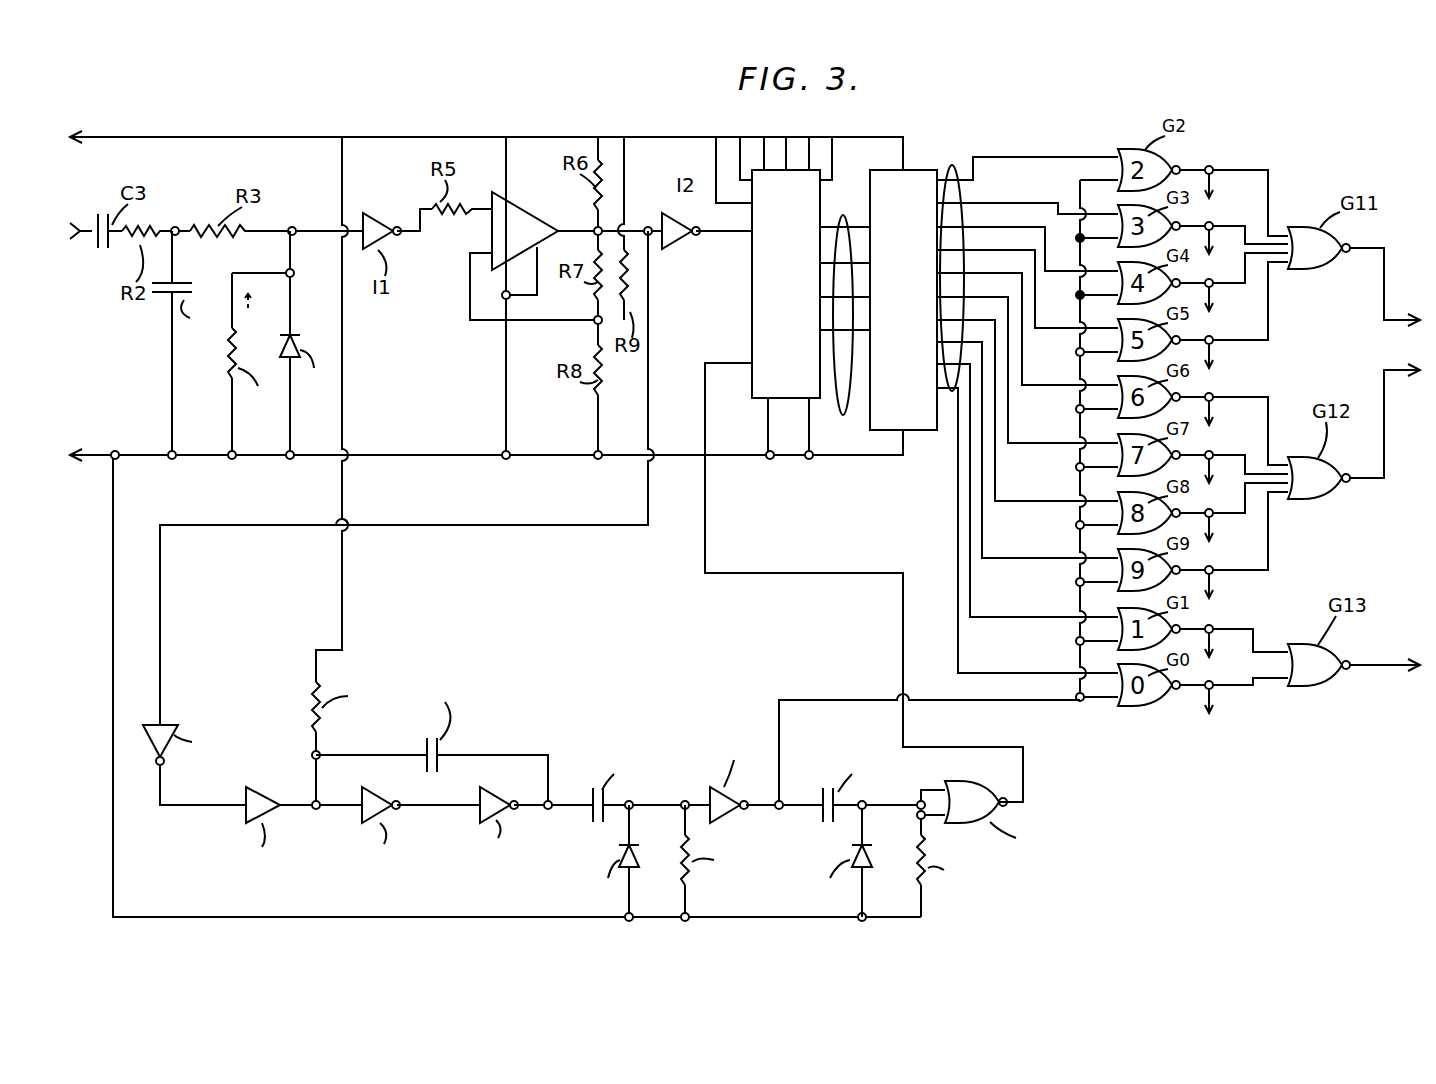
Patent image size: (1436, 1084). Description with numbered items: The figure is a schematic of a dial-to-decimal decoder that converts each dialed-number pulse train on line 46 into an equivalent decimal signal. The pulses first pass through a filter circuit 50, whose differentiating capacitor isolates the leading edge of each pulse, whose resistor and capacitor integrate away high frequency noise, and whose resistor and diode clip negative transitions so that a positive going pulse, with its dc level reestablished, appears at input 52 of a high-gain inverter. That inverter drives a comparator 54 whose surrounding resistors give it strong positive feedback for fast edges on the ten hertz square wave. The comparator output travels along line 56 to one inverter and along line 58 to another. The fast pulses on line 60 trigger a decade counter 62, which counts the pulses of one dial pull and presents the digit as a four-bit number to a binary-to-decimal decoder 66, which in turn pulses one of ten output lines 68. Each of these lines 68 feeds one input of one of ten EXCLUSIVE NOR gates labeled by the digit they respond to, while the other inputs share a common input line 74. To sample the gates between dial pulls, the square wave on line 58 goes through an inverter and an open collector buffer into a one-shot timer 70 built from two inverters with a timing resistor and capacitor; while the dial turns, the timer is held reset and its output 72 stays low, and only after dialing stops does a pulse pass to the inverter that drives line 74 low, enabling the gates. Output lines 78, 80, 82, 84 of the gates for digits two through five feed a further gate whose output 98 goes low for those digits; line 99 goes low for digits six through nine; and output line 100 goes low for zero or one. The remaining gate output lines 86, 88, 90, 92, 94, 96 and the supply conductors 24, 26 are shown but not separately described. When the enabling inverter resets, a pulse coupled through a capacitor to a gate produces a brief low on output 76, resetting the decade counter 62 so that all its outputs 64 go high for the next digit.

The power supply line 24 is at (128, 137).
The ground line 26 is at (115, 455).
The line 46 is at (82, 240).
The filter circuit 50 is at (153, 338).
The input 52 is at (310, 228).
The comparator 54 is at (522, 212).
The line 56 is at (646, 225).
The line 58 is at (652, 325).
The line 60 is at (716, 240).
The decade counter 62 is at (752, 312).
The outputs 64 is at (842, 340).
The binary-to-decimal decoder 66 is at (920, 432).
The output lines 68 is at (952, 165).
The one-shot timer 70 is at (505, 710).
The output 72 is at (556, 820).
The common input line 74 is at (782, 750).
The output 76 is at (1026, 770).
The output line 78 is at (1240, 170).
The output line 80 is at (1228, 226).
The output line 82 is at (1228, 284).
The output line 84 is at (1250, 340).
The gate G6 output line 86 is at (1254, 397).
The gate G7 output line 88 is at (1222, 455).
The gate G8 output line 90 is at (1228, 514).
The gate G9 output line 92 is at (1244, 571).
The gate G1 output line 94 is at (1238, 630).
The gate G0 output line 96 is at (1240, 688).
The output 98 is at (1400, 320).
The line 99 is at (1398, 372).
The output line 100 is at (1390, 668).